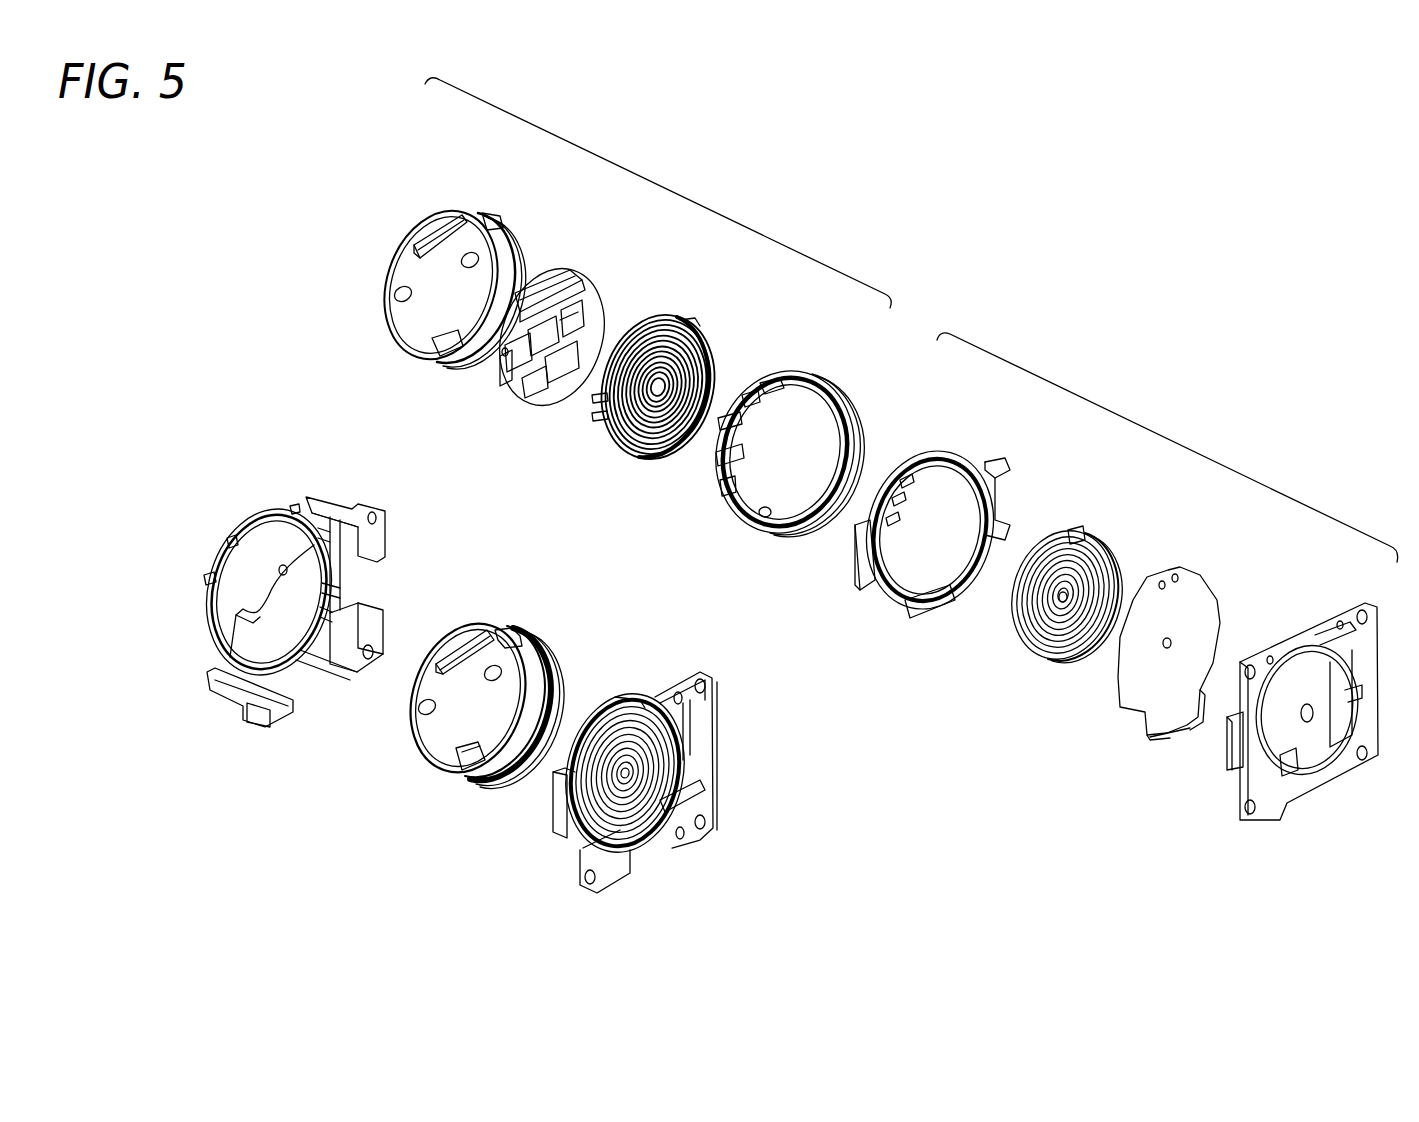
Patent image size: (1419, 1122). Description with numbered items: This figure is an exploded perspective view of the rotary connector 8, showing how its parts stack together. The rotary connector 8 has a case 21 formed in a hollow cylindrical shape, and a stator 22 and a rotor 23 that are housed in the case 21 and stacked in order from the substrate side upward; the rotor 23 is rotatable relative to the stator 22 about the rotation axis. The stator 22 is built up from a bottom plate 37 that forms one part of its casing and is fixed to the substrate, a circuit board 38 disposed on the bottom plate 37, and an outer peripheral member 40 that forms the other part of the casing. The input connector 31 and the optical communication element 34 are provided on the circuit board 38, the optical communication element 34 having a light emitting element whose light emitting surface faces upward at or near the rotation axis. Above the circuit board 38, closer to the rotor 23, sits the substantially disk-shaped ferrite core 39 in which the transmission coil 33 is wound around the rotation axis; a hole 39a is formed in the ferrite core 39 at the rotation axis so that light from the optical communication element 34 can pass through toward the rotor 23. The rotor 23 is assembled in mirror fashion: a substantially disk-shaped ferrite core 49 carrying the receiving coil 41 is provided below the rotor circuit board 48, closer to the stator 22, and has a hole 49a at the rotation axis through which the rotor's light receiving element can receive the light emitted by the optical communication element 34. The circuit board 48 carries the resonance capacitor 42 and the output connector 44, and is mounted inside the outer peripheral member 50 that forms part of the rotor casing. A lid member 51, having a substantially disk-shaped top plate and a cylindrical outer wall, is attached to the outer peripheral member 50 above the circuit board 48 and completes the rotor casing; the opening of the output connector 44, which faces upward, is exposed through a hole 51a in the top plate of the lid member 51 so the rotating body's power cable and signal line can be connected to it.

The rotary connector 8 is at (1346, 866).
The case 21 is at (262, 727).
The stator 22 is at (1172, 442).
The rotor 23 is at (657, 184).
The input connector 31 is at (1168, 737).
The transmission coil 33 is at (1083, 520).
The optical communication element 34 is at (1167, 643).
The bottom plate 37 is at (1370, 637).
The circuit board 38 is at (1187, 652).
The ferrite core 39 is at (1074, 592).
The hole 39a is at (1068, 663).
The outer peripheral member 40 is at (963, 443).
The receiving coil 41 is at (687, 323).
The resonance capacitor 42 is at (627, 332).
The output connector 44 is at (533, 283).
The circuit board 48 is at (600, 335).
The ferrite core 49 is at (677, 393).
The hole 49a is at (660, 455).
The outer peripheral member 50 is at (843, 390).
The lid member 51 is at (439, 280).
The hole 51a is at (445, 213).